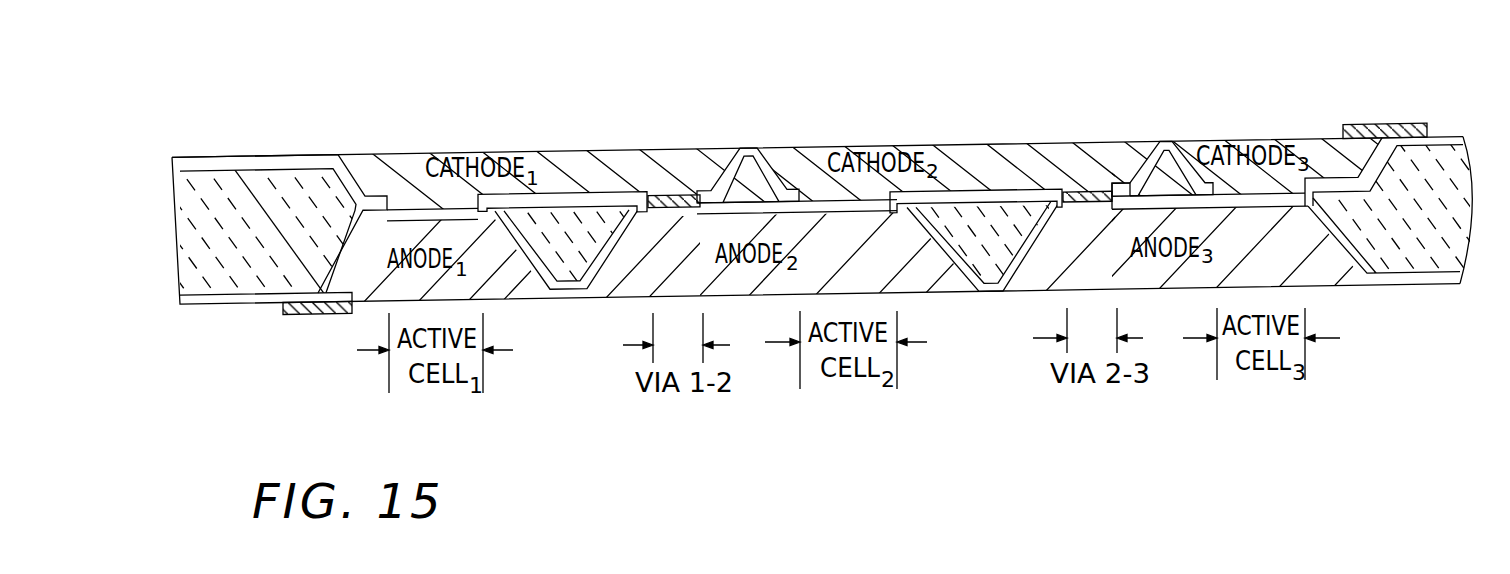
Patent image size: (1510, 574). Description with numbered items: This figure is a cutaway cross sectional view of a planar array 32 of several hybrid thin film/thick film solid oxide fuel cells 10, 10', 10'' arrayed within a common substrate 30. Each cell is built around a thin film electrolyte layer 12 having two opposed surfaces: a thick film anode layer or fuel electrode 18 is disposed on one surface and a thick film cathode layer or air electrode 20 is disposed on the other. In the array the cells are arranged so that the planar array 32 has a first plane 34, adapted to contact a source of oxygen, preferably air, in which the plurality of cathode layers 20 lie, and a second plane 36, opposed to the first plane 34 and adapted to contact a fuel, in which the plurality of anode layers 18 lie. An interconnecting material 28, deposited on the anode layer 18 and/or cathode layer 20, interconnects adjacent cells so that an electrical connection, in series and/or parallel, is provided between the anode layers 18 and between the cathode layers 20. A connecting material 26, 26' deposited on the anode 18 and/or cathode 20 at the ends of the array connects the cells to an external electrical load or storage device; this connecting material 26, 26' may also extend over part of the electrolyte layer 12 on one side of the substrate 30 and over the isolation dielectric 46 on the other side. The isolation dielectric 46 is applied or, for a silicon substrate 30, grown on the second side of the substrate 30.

The hybrid thin film/thick film solid oxide fuel cell 10 is at (436, 199).
The hybrid thin film/thick film fuel cell 10' is at (906, 188).
The hybrid thin film/thick film fuel cell 10'' is at (1287, 173).
The thin film electrolyte layer 12 is at (587, 296).
The thick film anode layer/fuel electrode 18 is at (512, 291).
The thick film cathode layer/air electrode 20 is at (412, 153).
The connecting material 26 is at (317, 358).
The connecting material 26' is at (1394, 103).
The interconnecting material 28 is at (661, 195).
The substrate 30 is at (755, 145).
The planar array 32 is at (1480, 240).
The first plane 34 is at (547, 142).
The second plane 36 is at (244, 305).
The isolation dielectric 46 is at (220, 158).